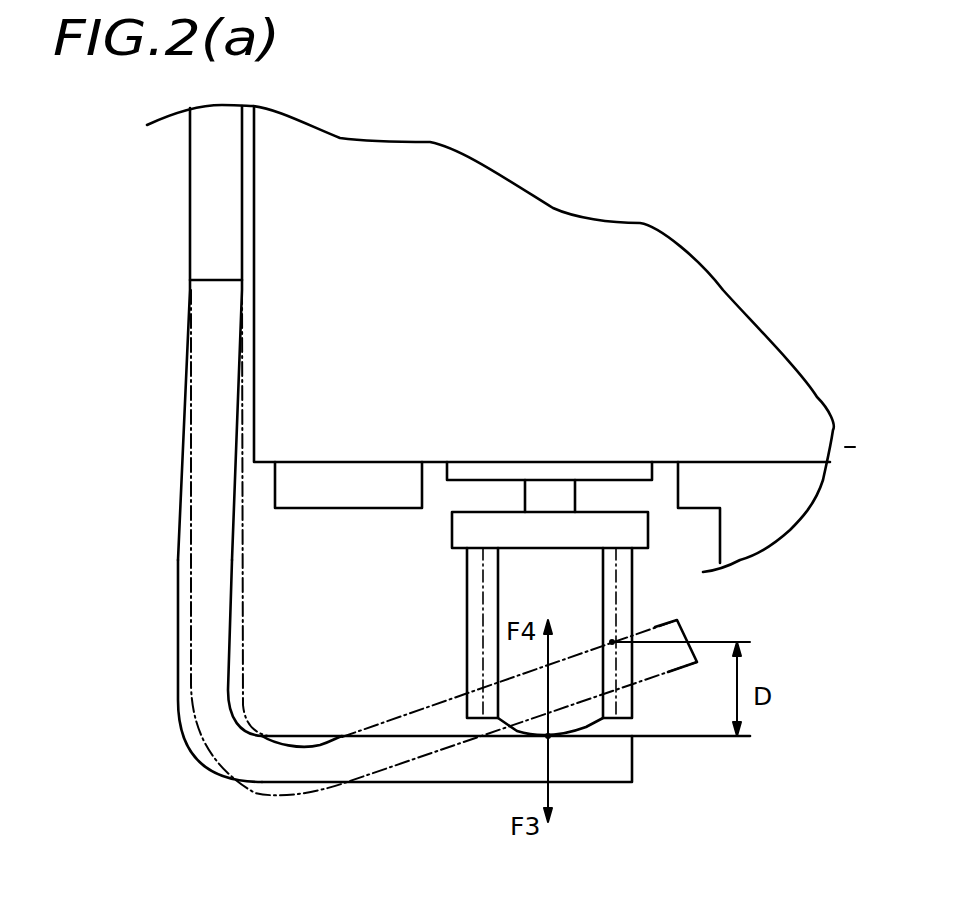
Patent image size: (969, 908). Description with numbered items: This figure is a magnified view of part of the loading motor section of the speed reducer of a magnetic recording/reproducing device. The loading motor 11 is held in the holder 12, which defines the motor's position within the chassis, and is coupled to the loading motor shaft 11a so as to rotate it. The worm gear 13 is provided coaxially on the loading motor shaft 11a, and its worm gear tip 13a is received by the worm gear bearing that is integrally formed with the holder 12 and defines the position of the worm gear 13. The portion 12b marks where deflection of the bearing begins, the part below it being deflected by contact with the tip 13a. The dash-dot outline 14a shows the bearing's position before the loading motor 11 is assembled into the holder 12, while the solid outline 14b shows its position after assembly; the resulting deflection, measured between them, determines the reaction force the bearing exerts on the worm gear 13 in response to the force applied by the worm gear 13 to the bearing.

The loading motor 11 is at (542, 228).
The loading motor shaft 11a is at (553, 498).
The holder 12 is at (210, 157).
The deflection portion of worm gear bearing 12b is at (218, 280).
The worm gear 13 is at (520, 572).
The worm gear tip 13a is at (548, 738).
The position of worm gear bearing before assembly 14a is at (423, 727).
The position of worm gear bearing after assembly 14b is at (440, 767).